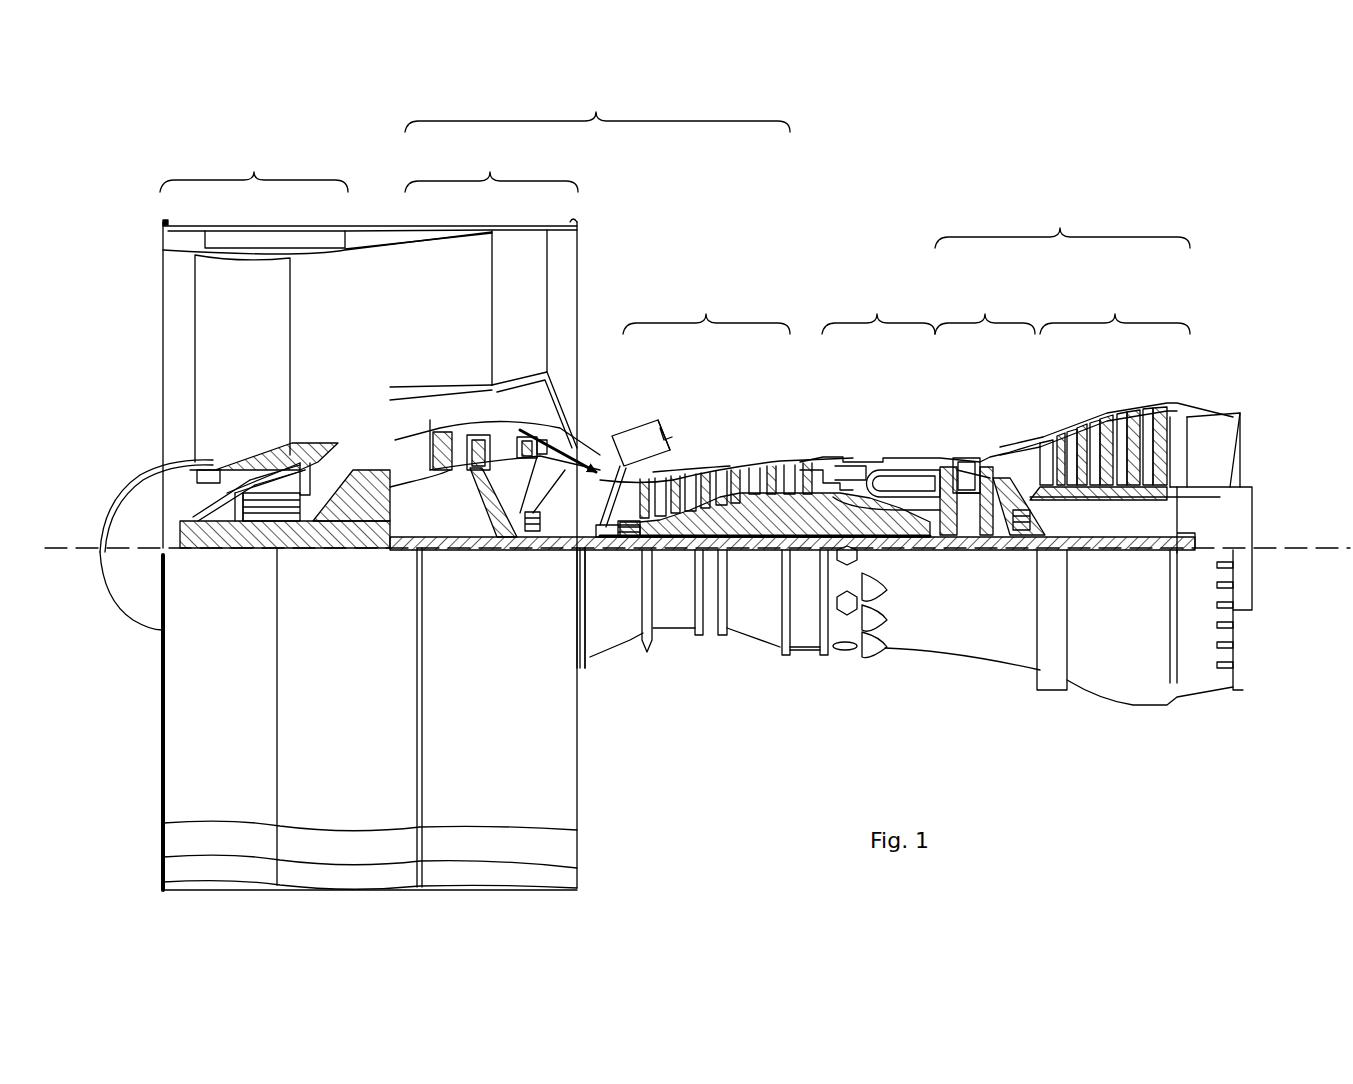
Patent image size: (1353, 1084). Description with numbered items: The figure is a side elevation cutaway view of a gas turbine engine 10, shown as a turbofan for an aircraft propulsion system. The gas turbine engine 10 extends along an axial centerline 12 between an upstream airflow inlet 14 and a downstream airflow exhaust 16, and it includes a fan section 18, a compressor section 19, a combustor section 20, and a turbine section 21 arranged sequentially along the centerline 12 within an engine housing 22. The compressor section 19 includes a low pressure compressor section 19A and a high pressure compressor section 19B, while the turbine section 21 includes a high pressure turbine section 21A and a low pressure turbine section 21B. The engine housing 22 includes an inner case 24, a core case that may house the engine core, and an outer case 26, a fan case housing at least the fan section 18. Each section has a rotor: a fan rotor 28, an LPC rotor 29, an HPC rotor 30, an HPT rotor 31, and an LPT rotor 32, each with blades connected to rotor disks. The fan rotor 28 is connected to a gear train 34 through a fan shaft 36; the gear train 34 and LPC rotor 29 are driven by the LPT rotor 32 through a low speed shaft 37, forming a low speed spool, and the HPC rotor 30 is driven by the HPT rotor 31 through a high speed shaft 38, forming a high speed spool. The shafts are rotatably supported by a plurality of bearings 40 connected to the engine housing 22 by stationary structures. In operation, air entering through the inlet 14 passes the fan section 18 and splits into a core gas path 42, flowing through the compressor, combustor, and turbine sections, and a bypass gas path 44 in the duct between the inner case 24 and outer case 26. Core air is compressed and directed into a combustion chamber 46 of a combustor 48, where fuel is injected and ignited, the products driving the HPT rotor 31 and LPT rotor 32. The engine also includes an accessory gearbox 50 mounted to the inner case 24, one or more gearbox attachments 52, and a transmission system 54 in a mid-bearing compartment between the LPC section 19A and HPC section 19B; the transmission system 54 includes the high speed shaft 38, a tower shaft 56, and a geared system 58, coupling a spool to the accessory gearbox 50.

The gas turbine engine 10 is at (1172, 184).
The axial centerline 12 is at (1305, 548).
The upstream airflow inlet 14 is at (163, 327).
The downstream airflow exhaust 16 is at (1247, 447).
The fan section 18 is at (254, 300).
The compressor section 19 is at (597, 102).
The low pressure compressor section 19A is at (495, 312).
The high pressure compressor section 19B is at (765, 409).
The combustor section 20 is at (920, 385).
The turbine section 21 is at (1062, 218).
The high pressure turbine section 21A is at (990, 408).
The low pressure turbine section 21B is at (1131, 390).
The engine housing 22 is at (597, 667).
The inner case 24 is at (808, 650).
The outer case 26 is at (493, 883).
The fan rotor 28 is at (213, 477).
The LPC rotor 29 is at (487, 503).
The HPC rotor 30 is at (752, 520).
The HPT rotor 31 is at (967, 523).
The LPT rotor 32 is at (1113, 497).
The gear train 34 is at (373, 527).
The fan shaft 36 is at (233, 533).
The low speed shaft 37 is at (1123, 550).
The high speed shaft 38 is at (898, 535).
The bearings 40 is at (280, 533).
The core gas path 42 is at (365, 432).
The bypass gas path 44 is at (420, 309).
The combustion chamber 46 is at (893, 490).
The combustor 48 is at (913, 465).
The accessory gearbox 50 is at (633, 440).
The gearbox attachments 52 is at (667, 450).
The transmission system 54 is at (598, 448).
The tower shaft 56 is at (653, 472).
The geared system 58 is at (613, 537).